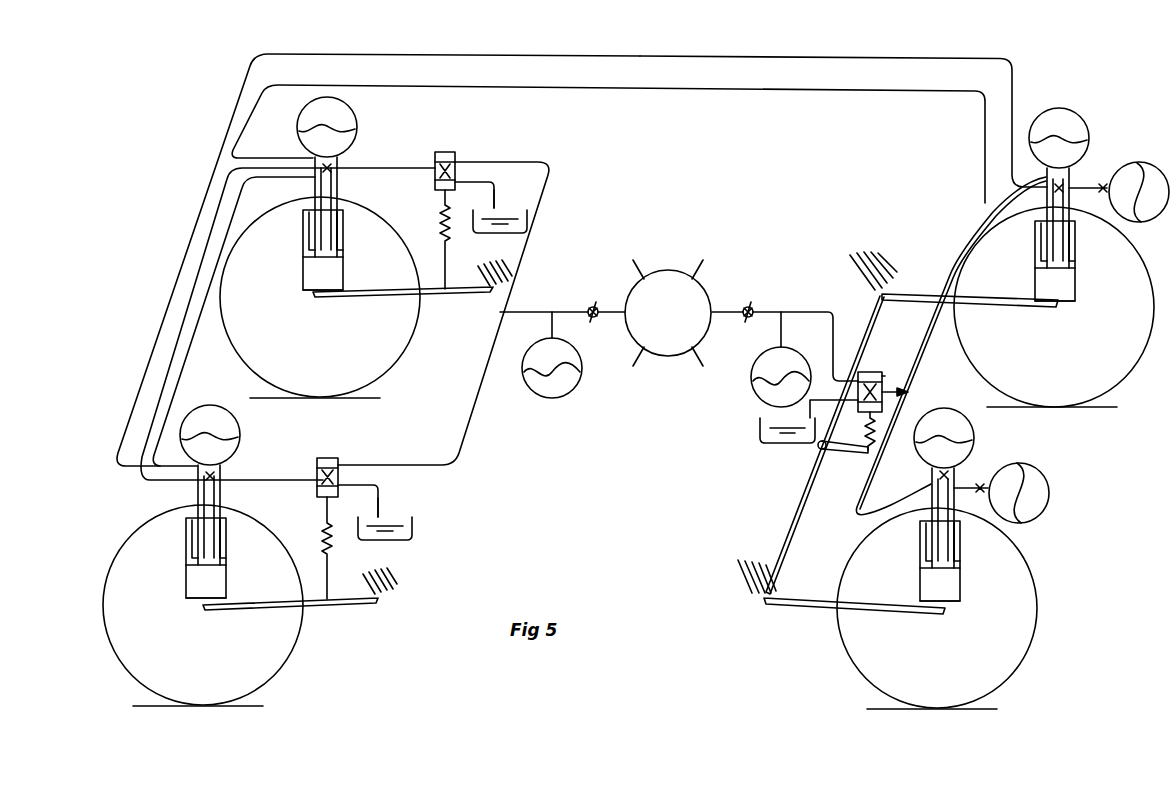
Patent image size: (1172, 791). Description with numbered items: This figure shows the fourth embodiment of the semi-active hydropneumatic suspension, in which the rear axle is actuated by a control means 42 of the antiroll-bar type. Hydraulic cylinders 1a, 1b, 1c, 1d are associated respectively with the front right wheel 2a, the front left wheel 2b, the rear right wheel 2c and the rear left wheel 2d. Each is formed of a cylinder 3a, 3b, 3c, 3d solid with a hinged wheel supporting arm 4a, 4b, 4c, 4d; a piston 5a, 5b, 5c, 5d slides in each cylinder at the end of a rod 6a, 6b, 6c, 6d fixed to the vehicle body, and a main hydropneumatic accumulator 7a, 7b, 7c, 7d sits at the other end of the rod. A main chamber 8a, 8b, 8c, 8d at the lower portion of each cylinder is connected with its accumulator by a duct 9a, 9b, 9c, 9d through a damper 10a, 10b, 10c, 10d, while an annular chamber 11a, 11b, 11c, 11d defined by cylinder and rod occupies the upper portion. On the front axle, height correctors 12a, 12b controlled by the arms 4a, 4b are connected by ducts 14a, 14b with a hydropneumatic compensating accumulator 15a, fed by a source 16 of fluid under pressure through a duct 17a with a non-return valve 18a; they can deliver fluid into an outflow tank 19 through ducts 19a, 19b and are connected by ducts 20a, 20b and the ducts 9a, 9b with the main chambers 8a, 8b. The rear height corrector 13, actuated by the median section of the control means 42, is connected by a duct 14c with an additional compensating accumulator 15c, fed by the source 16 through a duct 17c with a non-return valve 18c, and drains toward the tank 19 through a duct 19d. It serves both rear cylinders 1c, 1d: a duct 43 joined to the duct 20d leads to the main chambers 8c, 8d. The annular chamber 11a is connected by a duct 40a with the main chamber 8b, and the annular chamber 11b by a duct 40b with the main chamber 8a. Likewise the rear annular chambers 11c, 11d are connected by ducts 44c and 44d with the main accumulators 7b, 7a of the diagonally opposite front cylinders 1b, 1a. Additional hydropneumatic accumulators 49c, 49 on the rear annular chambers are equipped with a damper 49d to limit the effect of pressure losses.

The hydraulic cylinder 1a is at (385, 246).
The hydraulic cylinder 1b is at (283, 535).
The hydraulic cylinder 1c is at (1011, 236).
The hydraulic cylinder 1d is at (927, 540).
The front right wheel 2a is at (395, 362).
The front left wheel 2b is at (222, 605).
The rear right wheel 2c is at (1054, 323).
The rear left wheel 2d is at (970, 608).
The cylinder 3a is at (343, 268).
The cylinder 3b is at (233, 558).
The cylinder 3c is at (1086, 275).
The cylinder 3d is at (972, 567).
The wheel supporting arm 4a is at (452, 303).
The wheel supporting arm 4b is at (300, 570).
The wheel supporting arm 4c is at (954, 270).
The wheel supporting arm 4d is at (841, 610).
The piston 5a is at (316, 259).
The piston 5b is at (173, 591).
The piston 5c is at (1087, 280).
The piston 5d is at (972, 573).
The rod 6a is at (338, 183).
The rod 6b is at (234, 515).
The rod 6c is at (1004, 216).
The rod 6d is at (912, 518).
The main hydropneumatic accumulator 7a is at (357, 110).
The main hydropneumatic accumulator 7b is at (210, 414).
The main hydropneumatic accumulator 7c is at (1091, 101).
The main hydropneumatic accumulator 7d is at (944, 419).
The main chamber 8a is at (320, 290).
The main chamber 8b is at (179, 630).
The main chamber 8c is at (1027, 282).
The main chamber 8d is at (913, 586).
The duct 9a is at (338, 238).
The duct 9b is at (244, 539).
The duct 9c is at (1104, 242).
The duct 9d is at (979, 542).
The damper 10a is at (340, 166).
The damper 10b is at (246, 467).
The damper 10c is at (1046, 119).
The damper 10d is at (918, 470).
The annular chamber 11a is at (316, 242).
The annular chamber 11b is at (168, 524).
The annular chamber 11c is at (1030, 220).
The annular chamber 11d is at (909, 520).
The height corrector 12a is at (458, 152).
The height corrector 12b is at (379, 470).
The height corrector 13 is at (887, 367).
The duct 14a is at (548, 178).
The duct 14b is at (455, 462).
The pressure line 14c is at (805, 310).
The hydropneumatic compensating accumulator 15a is at (552, 399).
The additional hydropneumatic compensating accumulator 15c is at (752, 402).
The source of fluid under pressure 16 is at (670, 268).
The duct 17a is at (593, 306).
The duct 17c is at (748, 306).
The non-return valve 18a is at (598, 322).
The non-return valve 18c is at (744, 322).
The outflow tank 19 is at (483, 241).
The duct 19a is at (494, 190).
The duct 19b is at (421, 499).
The return line to reservoir 19d is at (718, 434).
The duct 20a is at (437, 150).
The duct 20b is at (317, 460).
The duct 20d is at (890, 372).
The duct 40a is at (172, 392).
The duct 40b is at (186, 318).
The control means 42 is at (800, 512).
The duct 43 is at (873, 480).
The duct 44c is at (202, 214).
The duct 44d is at (665, 92).
The gas accumulator 49 is at (1053, 493).
The gas accumulator 49c is at (1120, 171).
The damper 49d is at (1015, 459).